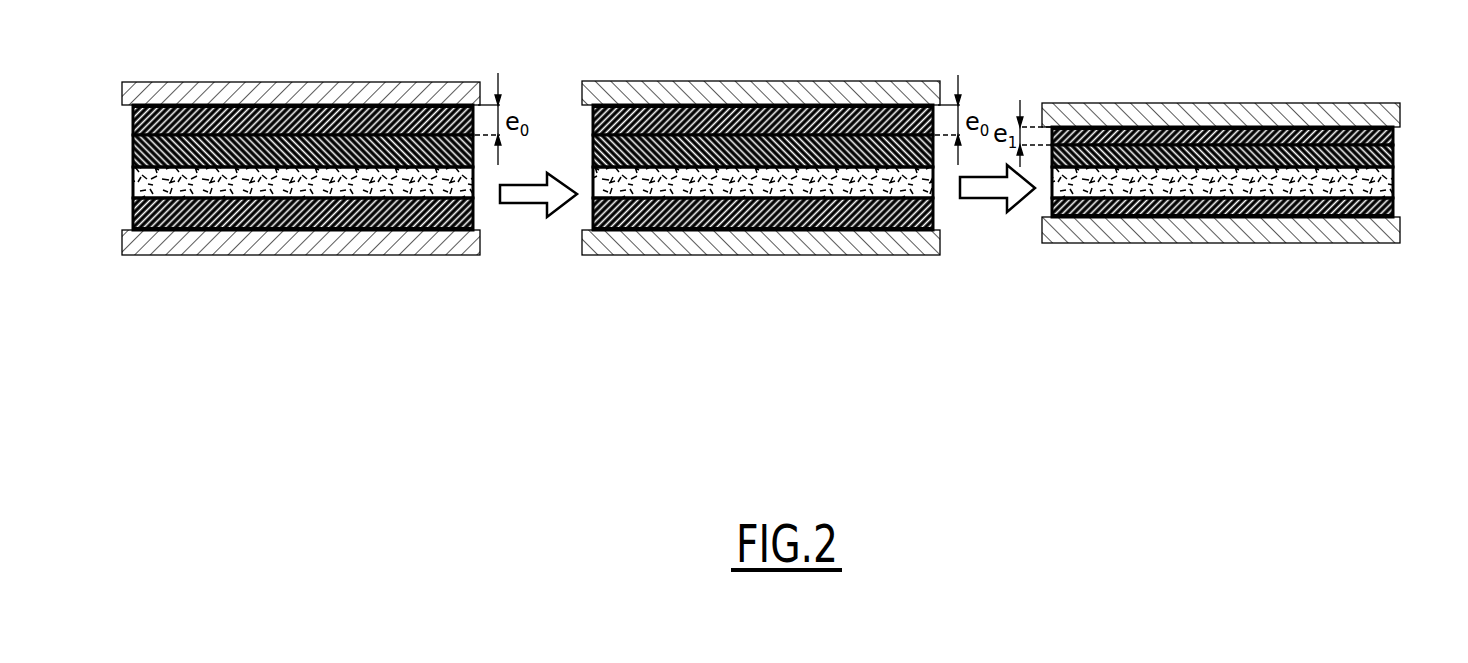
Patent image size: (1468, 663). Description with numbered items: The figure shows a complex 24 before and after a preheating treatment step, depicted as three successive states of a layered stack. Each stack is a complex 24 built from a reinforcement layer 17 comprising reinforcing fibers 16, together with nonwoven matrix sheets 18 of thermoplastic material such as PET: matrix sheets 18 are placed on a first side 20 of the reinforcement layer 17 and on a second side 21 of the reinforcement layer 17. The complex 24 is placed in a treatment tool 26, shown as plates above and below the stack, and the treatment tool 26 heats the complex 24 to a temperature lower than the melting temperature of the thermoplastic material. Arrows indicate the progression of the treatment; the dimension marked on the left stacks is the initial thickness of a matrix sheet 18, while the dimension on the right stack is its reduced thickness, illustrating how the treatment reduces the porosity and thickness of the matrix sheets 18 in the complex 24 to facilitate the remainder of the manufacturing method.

The reinforcing fibers 16 is at (380, 152).
The reinforcement layer 17 is at (133, 184).
The nonwoven matrix sheet 18 is at (318, 148).
The first side 20 is at (197, 165).
The second side 21 is at (197, 228).
The complex 24 is at (493, 228).
The treatment tool 26 is at (249, 94).